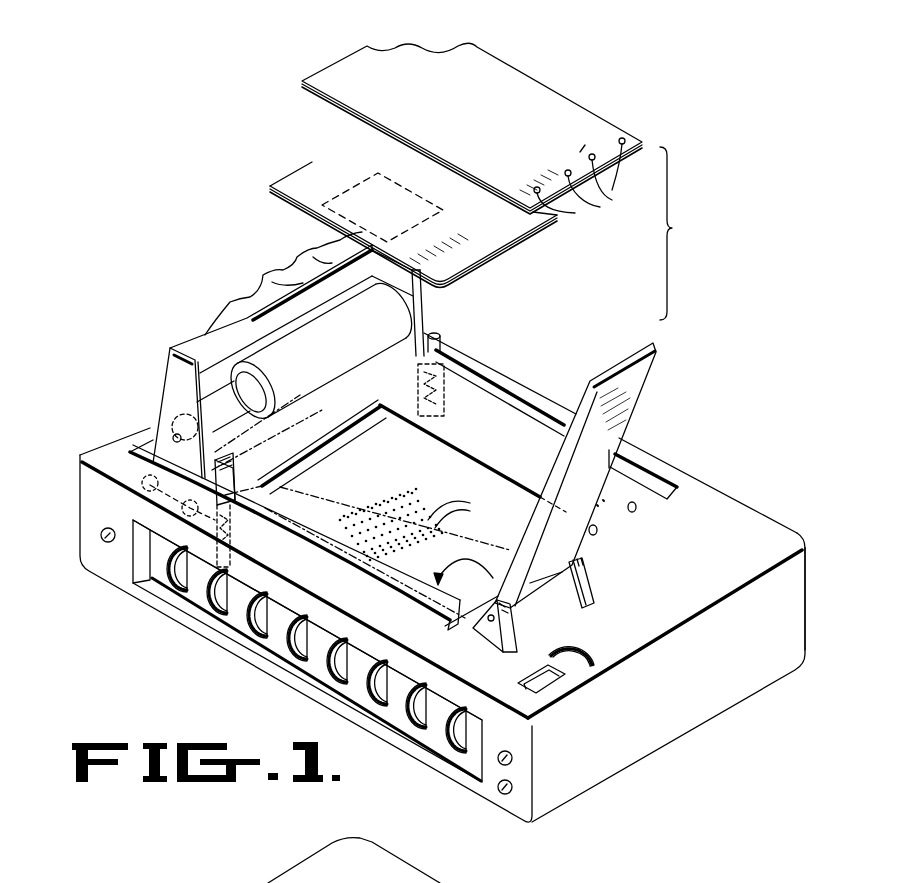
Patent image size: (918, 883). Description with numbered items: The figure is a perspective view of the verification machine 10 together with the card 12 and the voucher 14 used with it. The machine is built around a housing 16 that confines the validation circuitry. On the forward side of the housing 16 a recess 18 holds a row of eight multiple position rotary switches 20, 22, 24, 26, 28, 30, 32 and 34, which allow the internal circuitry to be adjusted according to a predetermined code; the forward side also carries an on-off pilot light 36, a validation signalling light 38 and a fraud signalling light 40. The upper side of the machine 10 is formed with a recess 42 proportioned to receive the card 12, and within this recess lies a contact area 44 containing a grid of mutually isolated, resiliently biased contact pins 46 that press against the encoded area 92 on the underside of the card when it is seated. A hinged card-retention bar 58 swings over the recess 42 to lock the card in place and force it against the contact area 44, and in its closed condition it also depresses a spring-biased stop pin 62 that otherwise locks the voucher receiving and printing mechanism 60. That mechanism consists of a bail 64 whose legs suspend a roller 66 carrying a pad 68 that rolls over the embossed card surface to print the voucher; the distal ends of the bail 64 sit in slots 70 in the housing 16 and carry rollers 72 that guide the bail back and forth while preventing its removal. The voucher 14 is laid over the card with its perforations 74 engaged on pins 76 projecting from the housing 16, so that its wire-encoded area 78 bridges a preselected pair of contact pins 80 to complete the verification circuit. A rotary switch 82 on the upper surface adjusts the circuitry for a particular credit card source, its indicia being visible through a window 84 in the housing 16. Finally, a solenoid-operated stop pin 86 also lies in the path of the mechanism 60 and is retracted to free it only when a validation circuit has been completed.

The verification machine 10 is at (722, 490).
The card 12 is at (391, 194).
The voucher 14 is at (478, 127).
The housing 16 is at (798, 595).
The recess 18 is at (477, 733).
The multiple position rotary switch 20 is at (174, 580).
The multiple position rotary switch 22 is at (212, 608).
The multiple position rotary switch 24 is at (252, 632).
The multiple position rotary switch 26 is at (294, 655).
The multiple position rotary switch 28 is at (335, 678).
The multiple position rotary switch 30 is at (378, 702).
The multiple position rotary switch 32 is at (420, 725).
The multiple position rotary switch 34 is at (460, 748).
The on-off pilot light 36 is at (100, 540).
The validation signalling light 38 is at (498, 763).
The fraud signalling light 40 is at (505, 795).
The recess 42 is at (457, 462).
The contact area 44 is at (360, 492).
The contact pins 46 is at (467, 508).
The card-retention bar 58 is at (640, 372).
The voucher receiving and printing mechanism 60 is at (311, 355).
The spring-biased stop pin 62 is at (272, 437).
The bail 64 is at (170, 347).
The roller 66 is at (210, 403).
The pad 68 is at (400, 318).
The slots 70 is at (497, 392).
The rollers 72 is at (148, 486).
The perforations 74 is at (583, 206).
The pins 76 is at (597, 530).
The wire-encoded area 78 is at (585, 145).
The contact pins 80 is at (612, 492).
The rotary switch 82 is at (594, 660).
The window 84 is at (560, 686).
The solenoid-operated stop pin 86 is at (442, 347).
The encoded area 92 is at (332, 188).